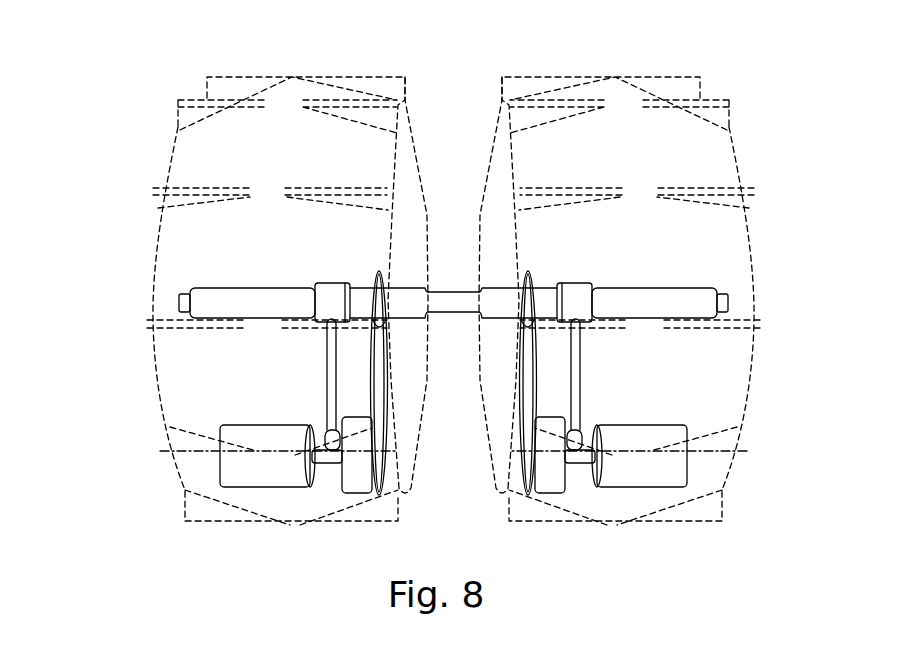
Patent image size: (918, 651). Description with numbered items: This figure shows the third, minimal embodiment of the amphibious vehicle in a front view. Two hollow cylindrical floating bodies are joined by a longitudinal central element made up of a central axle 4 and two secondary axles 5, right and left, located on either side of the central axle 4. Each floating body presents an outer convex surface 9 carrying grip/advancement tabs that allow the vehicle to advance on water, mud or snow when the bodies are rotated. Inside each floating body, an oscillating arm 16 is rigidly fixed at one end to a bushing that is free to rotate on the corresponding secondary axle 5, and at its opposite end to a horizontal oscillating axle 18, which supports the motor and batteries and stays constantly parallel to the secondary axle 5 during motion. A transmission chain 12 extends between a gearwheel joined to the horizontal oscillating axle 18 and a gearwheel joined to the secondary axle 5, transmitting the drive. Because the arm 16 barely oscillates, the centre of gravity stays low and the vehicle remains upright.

The central axle 4 is at (448, 290).
The secondary axle 5 is at (247, 297).
The convex surface 9 is at (302, 82).
The transmission chain 12 is at (328, 178).
The oscillating arm 16 is at (327, 367).
The horizontal oscillating axle 18 is at (333, 462).